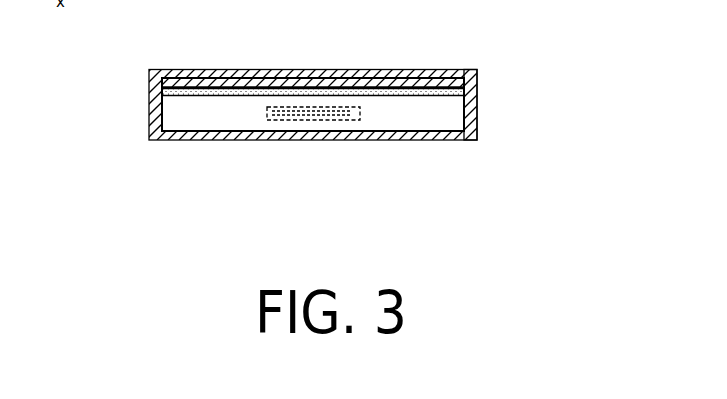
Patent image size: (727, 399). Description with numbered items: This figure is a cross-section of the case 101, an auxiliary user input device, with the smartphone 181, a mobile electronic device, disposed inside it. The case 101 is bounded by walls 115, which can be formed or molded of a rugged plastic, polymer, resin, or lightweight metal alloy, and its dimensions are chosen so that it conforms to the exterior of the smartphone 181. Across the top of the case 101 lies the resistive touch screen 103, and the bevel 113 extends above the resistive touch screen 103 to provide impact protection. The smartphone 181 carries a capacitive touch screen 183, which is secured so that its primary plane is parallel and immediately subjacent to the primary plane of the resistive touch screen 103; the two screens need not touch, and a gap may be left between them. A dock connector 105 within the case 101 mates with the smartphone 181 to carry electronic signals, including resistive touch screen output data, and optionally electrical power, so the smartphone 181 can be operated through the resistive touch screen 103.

The case 101 is at (115, 126).
The resistive touch screen 103 is at (253, 88).
The dock connector 105 is at (295, 120).
The bevel 113 is at (402, 77).
The walls 115 is at (470, 112).
The smartphone 181 is at (433, 112).
The capacitive touch screen 183 is at (302, 96).